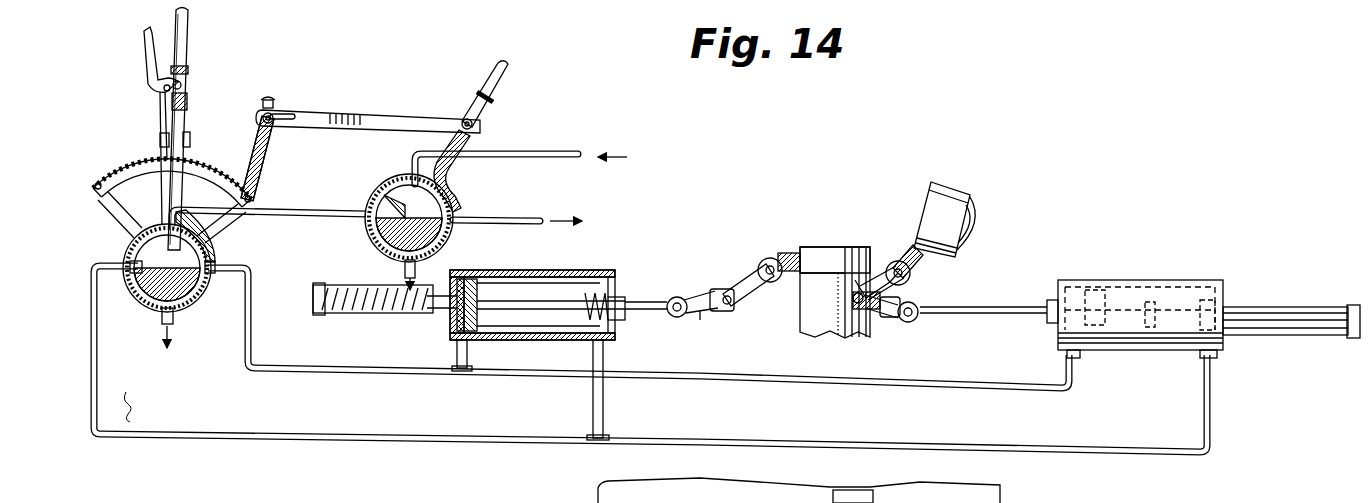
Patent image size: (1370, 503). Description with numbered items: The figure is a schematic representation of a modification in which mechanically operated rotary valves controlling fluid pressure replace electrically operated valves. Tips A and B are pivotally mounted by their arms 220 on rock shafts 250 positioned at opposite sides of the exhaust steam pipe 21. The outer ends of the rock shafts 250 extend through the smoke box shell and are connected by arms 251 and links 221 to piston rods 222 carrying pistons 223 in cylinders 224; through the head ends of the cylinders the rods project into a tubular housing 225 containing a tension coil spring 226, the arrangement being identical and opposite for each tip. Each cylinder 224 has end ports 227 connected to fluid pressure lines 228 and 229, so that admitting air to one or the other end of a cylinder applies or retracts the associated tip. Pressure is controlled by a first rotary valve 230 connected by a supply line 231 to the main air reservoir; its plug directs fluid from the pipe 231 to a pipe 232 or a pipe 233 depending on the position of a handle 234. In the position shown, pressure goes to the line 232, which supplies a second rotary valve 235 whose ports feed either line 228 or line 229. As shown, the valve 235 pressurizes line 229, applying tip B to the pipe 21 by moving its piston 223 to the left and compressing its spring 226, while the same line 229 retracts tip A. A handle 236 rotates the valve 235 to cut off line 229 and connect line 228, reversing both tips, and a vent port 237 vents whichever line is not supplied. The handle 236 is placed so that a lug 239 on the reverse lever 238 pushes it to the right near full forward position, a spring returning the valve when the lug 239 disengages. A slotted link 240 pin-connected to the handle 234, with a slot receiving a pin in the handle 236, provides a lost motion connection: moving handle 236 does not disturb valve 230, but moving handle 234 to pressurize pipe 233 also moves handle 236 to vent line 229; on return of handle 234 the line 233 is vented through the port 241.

The exhaust steam pipe 21 is at (832, 322).
The arm 220 is at (913, 258).
The link 221 is at (705, 312).
The piston rod 222 is at (652, 303).
The piston 223 is at (473, 274).
The cylinder 224 is at (596, 277).
The tubular housing 225 is at (399, 314).
The tension coil spring 226 is at (341, 311).
The end port 227 is at (593, 355).
The fluid pressure line 228 is at (405, 371).
The fluid pressure line 229 is at (433, 444).
The first rotary valve 230 is at (453, 198).
The supply line 231 is at (561, 139).
The pipe 232 is at (318, 201).
The pipe 233 is at (532, 218).
The handle 234 is at (473, 107).
The second rotary valve 235 is at (203, 308).
The handle 236 is at (248, 148).
The vent port 237 is at (161, 318).
The reverse lever 238 is at (190, 104).
The lug 239 is at (190, 143).
The slotted link 240 is at (356, 113).
The port 241 is at (402, 272).
The rock shaft 250 is at (769, 258).
The arm 251 is at (742, 282).
The tip A is at (968, 188).
The tip B is at (838, 258).